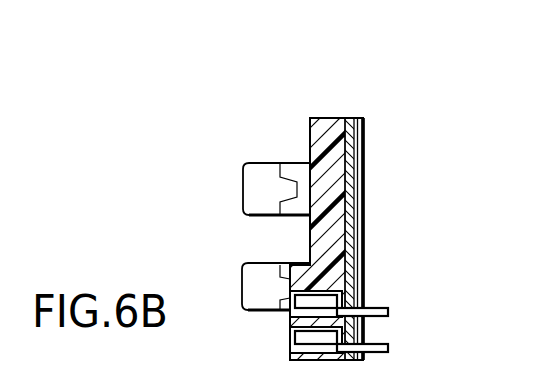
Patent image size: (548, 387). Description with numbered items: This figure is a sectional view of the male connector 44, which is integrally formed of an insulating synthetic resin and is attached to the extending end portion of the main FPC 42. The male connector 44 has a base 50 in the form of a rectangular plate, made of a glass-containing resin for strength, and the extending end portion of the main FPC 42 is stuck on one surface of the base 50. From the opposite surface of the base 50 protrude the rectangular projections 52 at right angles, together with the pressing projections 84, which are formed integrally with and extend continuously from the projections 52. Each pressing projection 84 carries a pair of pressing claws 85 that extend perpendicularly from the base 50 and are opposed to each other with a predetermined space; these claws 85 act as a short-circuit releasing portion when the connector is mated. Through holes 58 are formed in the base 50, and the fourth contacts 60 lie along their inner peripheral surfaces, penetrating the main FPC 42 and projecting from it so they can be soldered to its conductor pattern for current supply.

The male connector 44 is at (271, 136).
The base 50 is at (327, 118).
The main FPC 42 is at (365, 137).
The pressing projection 84 is at (302, 187).
The rectangular projection 52 is at (242, 187).
The pressing claw 85 is at (280, 166).
The fourth contact 60 is at (390, 312).
The through hole 58 is at (293, 338).